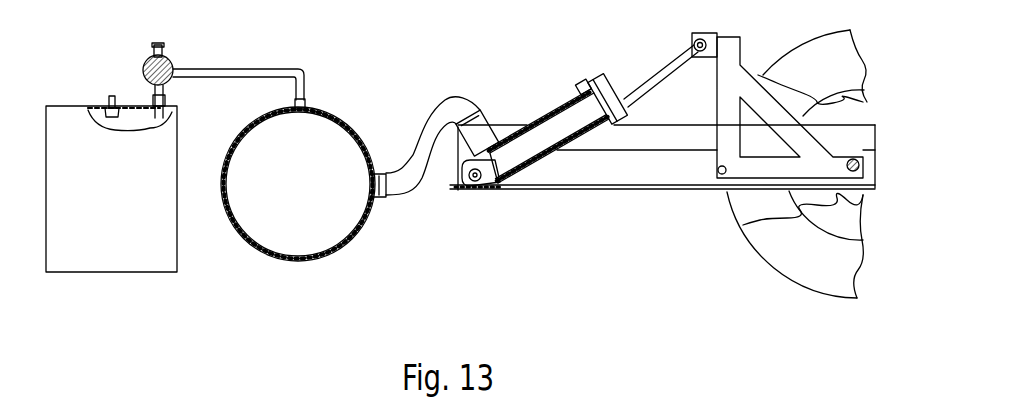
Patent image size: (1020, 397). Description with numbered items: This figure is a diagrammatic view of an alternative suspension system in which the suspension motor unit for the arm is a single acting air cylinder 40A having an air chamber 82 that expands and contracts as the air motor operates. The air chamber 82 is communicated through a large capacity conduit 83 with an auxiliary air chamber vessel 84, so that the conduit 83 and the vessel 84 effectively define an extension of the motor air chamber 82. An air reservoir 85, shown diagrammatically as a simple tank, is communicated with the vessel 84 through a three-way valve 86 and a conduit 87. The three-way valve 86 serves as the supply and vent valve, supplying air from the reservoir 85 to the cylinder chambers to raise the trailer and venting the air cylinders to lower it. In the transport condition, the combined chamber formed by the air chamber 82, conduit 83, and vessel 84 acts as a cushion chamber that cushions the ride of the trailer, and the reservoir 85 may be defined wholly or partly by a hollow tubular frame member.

The single acting air cylinder 40A is at (586, 112).
The air chamber 82 is at (542, 142).
The large capacity conduit 83 is at (420, 122).
The auxiliary air chamber vessel 84 is at (303, 247).
The air reservoir 85 is at (115, 260).
The three-way valve 86 is at (146, 61).
The conduit 87 is at (271, 59).